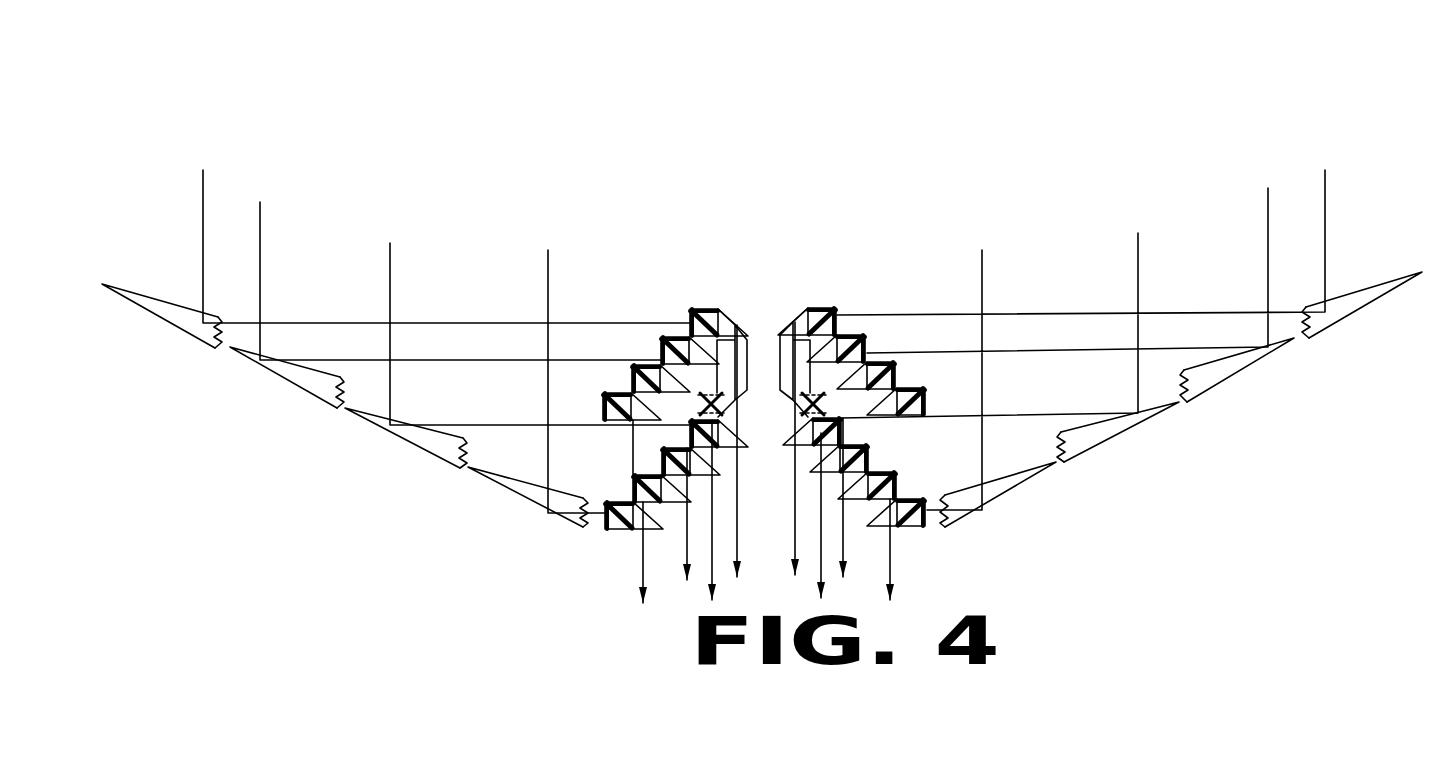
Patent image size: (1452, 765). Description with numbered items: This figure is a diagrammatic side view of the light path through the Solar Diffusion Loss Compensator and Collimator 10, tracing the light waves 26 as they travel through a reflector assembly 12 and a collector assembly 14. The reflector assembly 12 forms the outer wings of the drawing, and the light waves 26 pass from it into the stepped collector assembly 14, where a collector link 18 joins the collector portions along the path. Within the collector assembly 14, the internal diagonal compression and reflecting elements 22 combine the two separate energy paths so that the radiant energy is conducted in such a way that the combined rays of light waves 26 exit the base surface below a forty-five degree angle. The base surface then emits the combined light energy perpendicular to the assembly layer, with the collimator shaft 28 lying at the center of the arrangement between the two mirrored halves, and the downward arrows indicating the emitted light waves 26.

The Solar Diffusion Loss Compensator and Collimator 10 is at (1062, 176).
The reflector assembly 12 is at (1118, 464).
The collector assembly 14 is at (684, 288).
The collector link 18 is at (893, 437).
The reflecting elements 22 is at (868, 362).
The light waves 26 is at (1090, 313).
The collimator shaft 28 is at (786, 523).